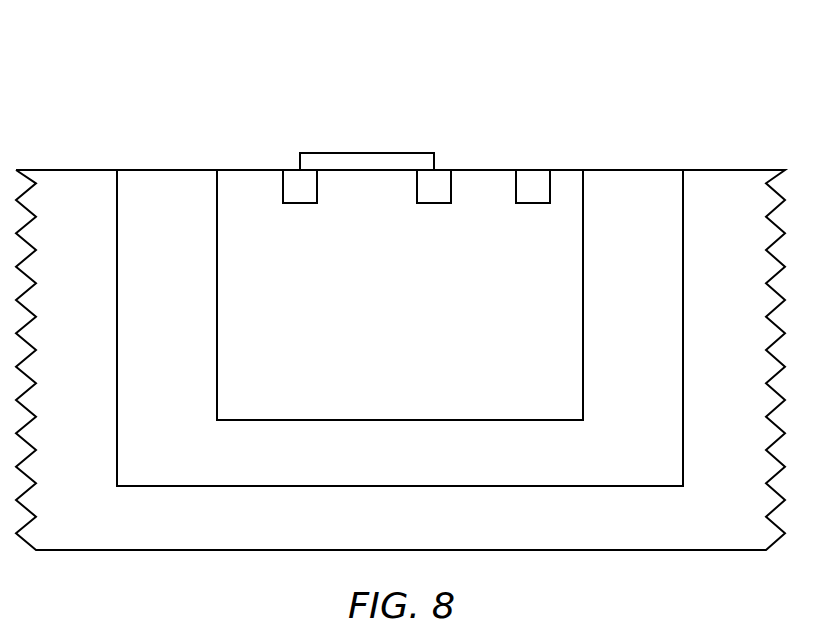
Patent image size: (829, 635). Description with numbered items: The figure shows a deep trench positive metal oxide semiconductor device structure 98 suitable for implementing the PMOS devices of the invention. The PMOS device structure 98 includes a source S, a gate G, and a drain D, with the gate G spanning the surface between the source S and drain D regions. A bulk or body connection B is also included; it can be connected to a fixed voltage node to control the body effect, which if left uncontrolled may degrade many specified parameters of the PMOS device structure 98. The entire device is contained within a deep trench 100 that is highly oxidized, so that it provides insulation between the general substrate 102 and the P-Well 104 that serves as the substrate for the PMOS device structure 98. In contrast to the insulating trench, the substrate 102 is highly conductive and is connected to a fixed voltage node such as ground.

The PMOS device structure 98 is at (186, 82).
The deep trench 100 is at (518, 463).
The substrate 102 is at (518, 530).
The P-Well 104 is at (483, 392).
The source S is at (291, 170).
The gate G is at (366, 153).
The drain D is at (440, 170).
The body connection B is at (533, 170).